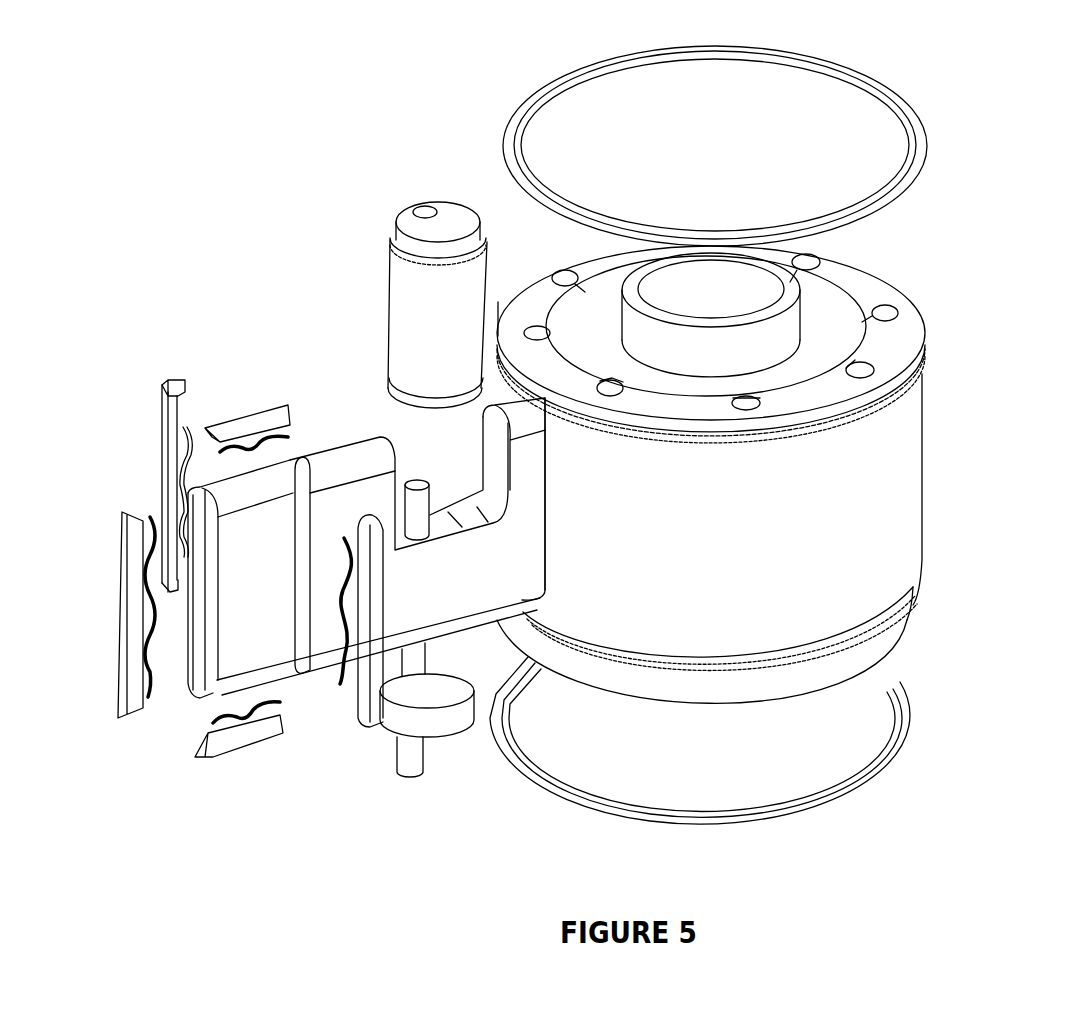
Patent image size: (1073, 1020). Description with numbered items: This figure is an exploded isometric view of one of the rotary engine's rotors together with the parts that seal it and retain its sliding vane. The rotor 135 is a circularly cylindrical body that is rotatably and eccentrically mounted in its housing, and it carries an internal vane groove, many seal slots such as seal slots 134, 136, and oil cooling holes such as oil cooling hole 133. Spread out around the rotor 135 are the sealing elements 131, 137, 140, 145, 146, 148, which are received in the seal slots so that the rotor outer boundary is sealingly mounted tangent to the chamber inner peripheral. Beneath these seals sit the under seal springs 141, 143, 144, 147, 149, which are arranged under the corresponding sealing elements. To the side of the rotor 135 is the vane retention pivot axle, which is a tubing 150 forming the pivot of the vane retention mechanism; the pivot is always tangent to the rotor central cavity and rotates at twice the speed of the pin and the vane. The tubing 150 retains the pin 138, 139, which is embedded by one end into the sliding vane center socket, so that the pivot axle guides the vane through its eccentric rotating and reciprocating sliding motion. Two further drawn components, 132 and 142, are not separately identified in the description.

The sealing element 131 is at (913, 113).
The central hub 132 is at (795, 328).
The oil cooling hole 133 is at (892, 311).
The seal slot 134 is at (935, 358).
The rotor 135 is at (907, 488).
The seal slot 136 is at (917, 603).
The sealing element 137 is at (903, 732).
The pin 138 is at (447, 724).
The pin 139 is at (412, 762).
The sealing element 140 is at (372, 728).
The under seal spring 141 is at (343, 685).
The lower wedge 142 is at (250, 758).
The under seal spring 143 is at (217, 720).
The under seal spring 144 is at (140, 700).
The sealing element 145 is at (113, 718).
The sealing element 146 is at (175, 378).
The under seal spring 147 is at (200, 412).
The sealing element 148 is at (242, 410).
The under seal spring 149 is at (288, 407).
The vane retention pivot axle 150 is at (400, 275).